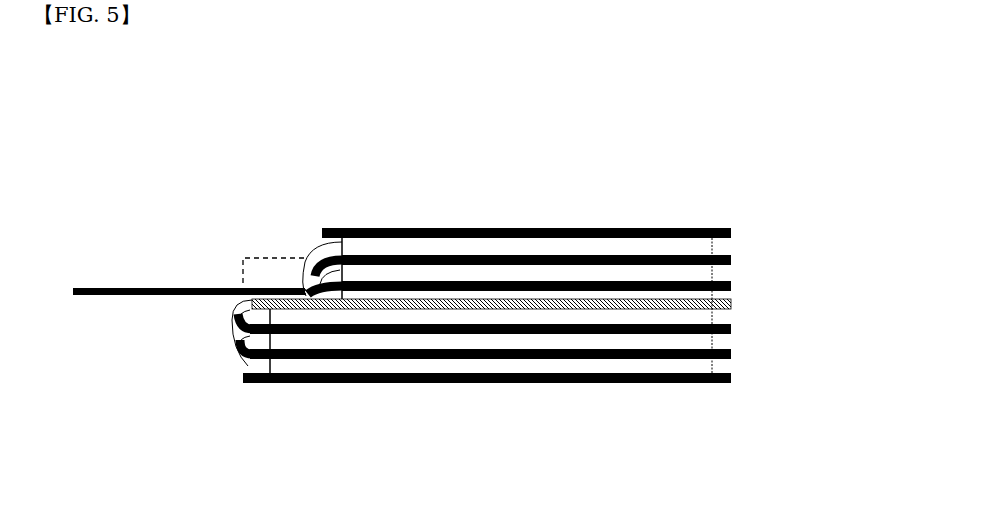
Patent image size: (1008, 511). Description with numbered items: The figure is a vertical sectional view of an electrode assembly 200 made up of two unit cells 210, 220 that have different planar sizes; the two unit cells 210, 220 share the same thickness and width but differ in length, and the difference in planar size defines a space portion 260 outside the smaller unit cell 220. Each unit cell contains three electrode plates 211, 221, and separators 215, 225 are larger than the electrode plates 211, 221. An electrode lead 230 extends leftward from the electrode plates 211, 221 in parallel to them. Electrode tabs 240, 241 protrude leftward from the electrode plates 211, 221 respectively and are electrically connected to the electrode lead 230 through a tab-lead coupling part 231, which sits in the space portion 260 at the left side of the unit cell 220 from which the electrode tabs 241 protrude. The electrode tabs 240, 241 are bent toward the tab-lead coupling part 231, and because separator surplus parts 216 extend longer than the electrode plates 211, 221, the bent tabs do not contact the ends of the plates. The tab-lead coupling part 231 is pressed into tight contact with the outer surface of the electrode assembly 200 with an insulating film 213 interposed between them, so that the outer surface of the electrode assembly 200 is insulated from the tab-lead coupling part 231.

The electrode assembly 200 is at (105, 108).
The unit cell 210 is at (777, 340).
The electrode plates 211 is at (695, 368).
The insulating film 213 is at (715, 293).
The separator 215 is at (707, 385).
The separator surplus parts 216 is at (245, 363).
The unit cell 220 is at (773, 275).
The electrode plates 221 is at (700, 250).
The separator 225 is at (697, 228).
The electrode lead 230 is at (133, 297).
The tab-lead coupling part 231 is at (265, 260).
The electrode tabs 240 is at (219, 345).
The electrode tabs 241 is at (305, 240).
The space portion 260 is at (245, 270).